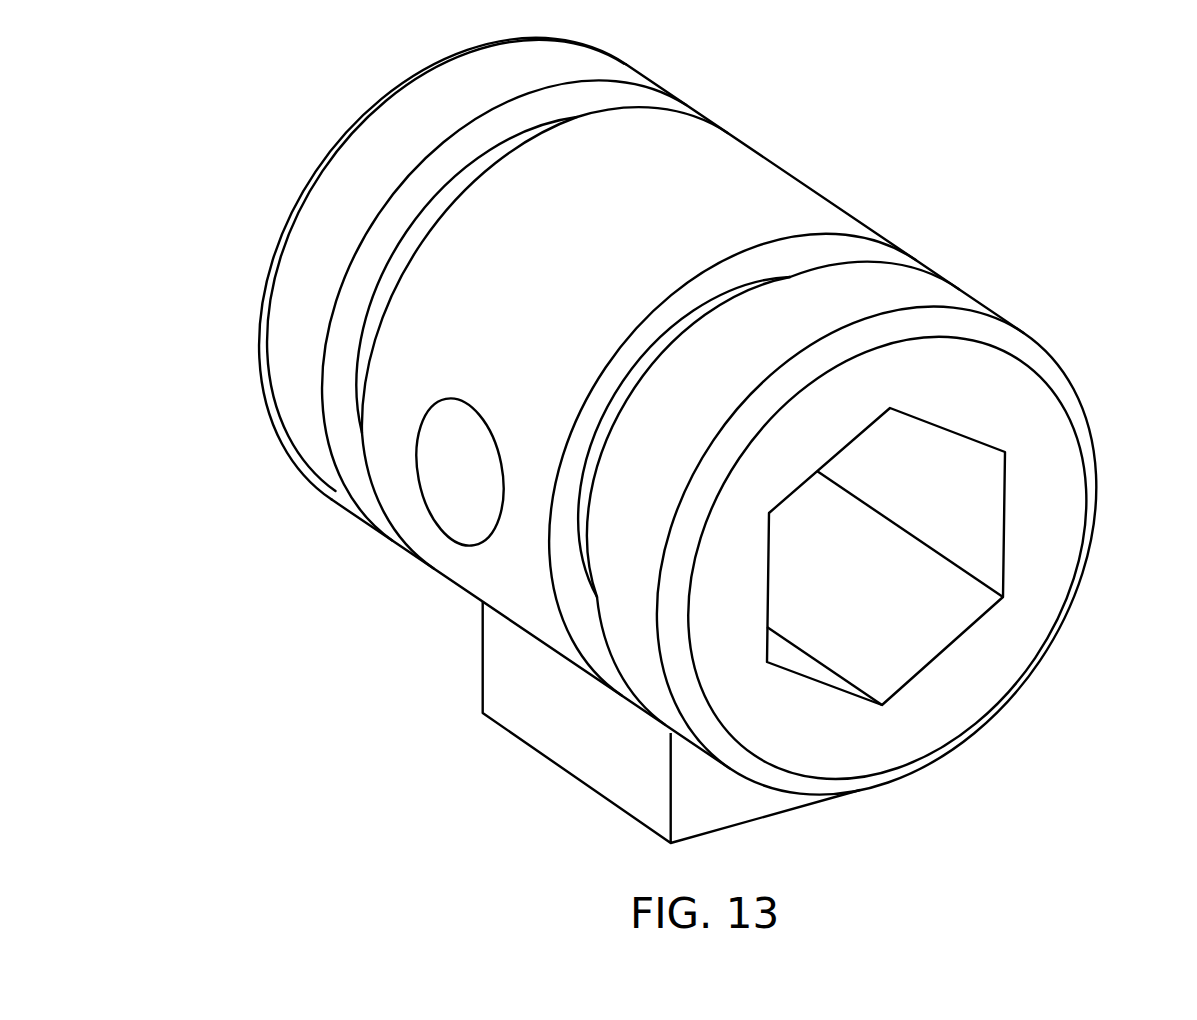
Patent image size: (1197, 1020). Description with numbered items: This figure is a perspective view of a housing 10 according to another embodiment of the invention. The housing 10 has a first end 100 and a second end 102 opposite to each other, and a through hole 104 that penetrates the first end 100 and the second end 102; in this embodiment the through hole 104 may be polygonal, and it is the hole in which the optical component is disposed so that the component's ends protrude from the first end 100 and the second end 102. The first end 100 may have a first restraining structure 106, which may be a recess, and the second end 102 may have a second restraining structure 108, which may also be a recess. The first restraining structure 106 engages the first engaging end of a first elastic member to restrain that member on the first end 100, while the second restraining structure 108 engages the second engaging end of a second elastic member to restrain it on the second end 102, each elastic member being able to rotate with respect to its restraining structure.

The housing 10 is at (725, 165).
The first end 100 is at (1057, 497).
The second end 102 is at (278, 250).
The through hole 104 is at (930, 625).
The first restraining structure 106 is at (851, 255).
The second restraining structure 108 is at (622, 92).